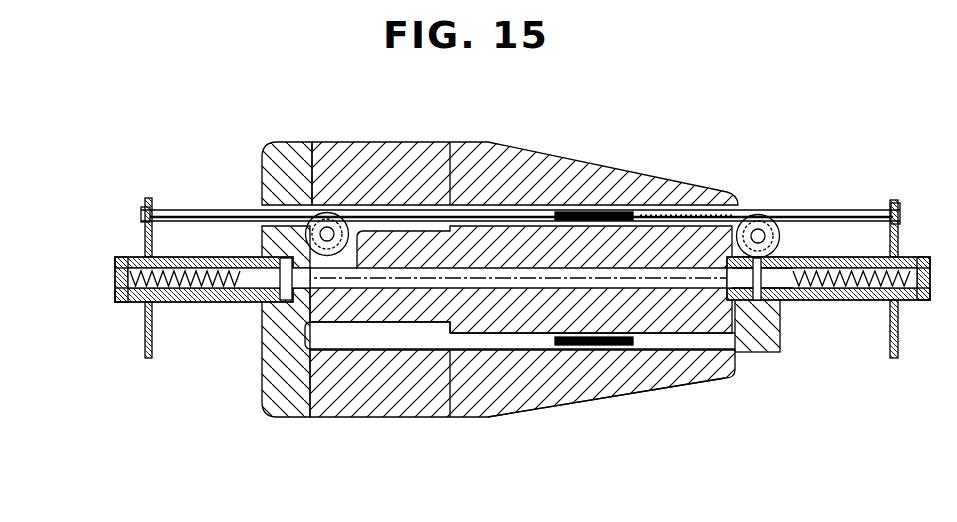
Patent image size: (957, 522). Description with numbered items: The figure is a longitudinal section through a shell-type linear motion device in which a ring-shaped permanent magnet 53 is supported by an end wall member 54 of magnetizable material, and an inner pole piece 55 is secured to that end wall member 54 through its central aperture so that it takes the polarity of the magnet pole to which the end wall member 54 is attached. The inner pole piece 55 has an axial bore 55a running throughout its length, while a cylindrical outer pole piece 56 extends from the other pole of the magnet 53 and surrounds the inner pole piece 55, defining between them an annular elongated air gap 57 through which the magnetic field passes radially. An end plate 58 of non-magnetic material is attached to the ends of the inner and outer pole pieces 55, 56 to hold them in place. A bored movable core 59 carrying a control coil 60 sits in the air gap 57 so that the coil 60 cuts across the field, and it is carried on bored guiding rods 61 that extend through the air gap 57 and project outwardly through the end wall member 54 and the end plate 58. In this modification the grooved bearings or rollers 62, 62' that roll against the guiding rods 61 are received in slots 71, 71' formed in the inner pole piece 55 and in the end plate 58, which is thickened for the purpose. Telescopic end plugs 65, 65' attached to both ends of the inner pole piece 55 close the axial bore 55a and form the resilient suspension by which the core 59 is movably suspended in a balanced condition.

The permanent magnet 53 is at (418, 417).
The end wall member 54 is at (290, 417).
The inner pole piece 55 is at (512, 334).
The axial bore 55a is at (542, 287).
The outer pole piece 56 is at (628, 392).
The air gap 57 is at (673, 344).
The end plate 58 is at (772, 353).
The movable core 59 is at (647, 210).
The control coil 60 is at (597, 212).
The guiding rods 61 is at (200, 210).
The bearing 62 is at (334, 183).
The bearing 62' is at (761, 211).
The telescopic end plug 65 is at (212, 304).
The telescopic end plug 65' is at (828, 303).
The slot 71 is at (354, 208).
The slot 71' is at (794, 240).